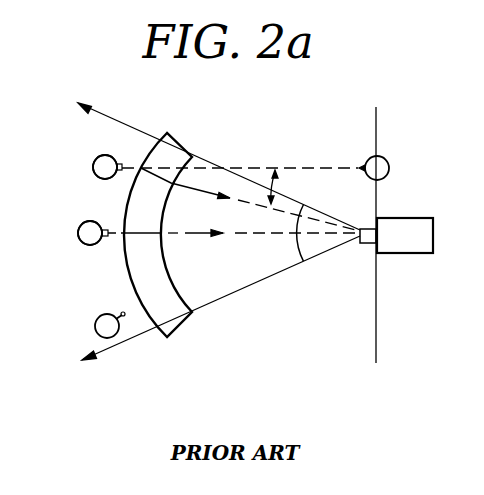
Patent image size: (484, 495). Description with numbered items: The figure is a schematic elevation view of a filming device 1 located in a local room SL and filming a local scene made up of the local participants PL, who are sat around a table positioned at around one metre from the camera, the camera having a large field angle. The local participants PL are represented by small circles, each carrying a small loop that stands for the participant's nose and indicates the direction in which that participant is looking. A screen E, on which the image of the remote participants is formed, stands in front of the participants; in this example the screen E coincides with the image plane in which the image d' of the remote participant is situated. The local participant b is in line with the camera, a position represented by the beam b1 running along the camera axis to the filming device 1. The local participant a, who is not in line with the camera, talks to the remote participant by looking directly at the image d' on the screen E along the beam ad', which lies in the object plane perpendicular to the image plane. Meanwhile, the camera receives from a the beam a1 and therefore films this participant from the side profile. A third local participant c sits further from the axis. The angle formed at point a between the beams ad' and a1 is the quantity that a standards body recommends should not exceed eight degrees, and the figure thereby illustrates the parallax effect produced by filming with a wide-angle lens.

The filming device 1 is at (405, 244).
The local participants PL is at (92, 221).
The local participant a is at (102, 152).
The local participant b is at (78, 233).
The local participant c is at (101, 327).
The image of remote participant d' is at (388, 168).
The local room SL is at (72, 378).
The screen E is at (376, 221).
The beam ad' is at (240, 156).
The beam a1 is at (250, 199).
The beam b1 is at (233, 246).